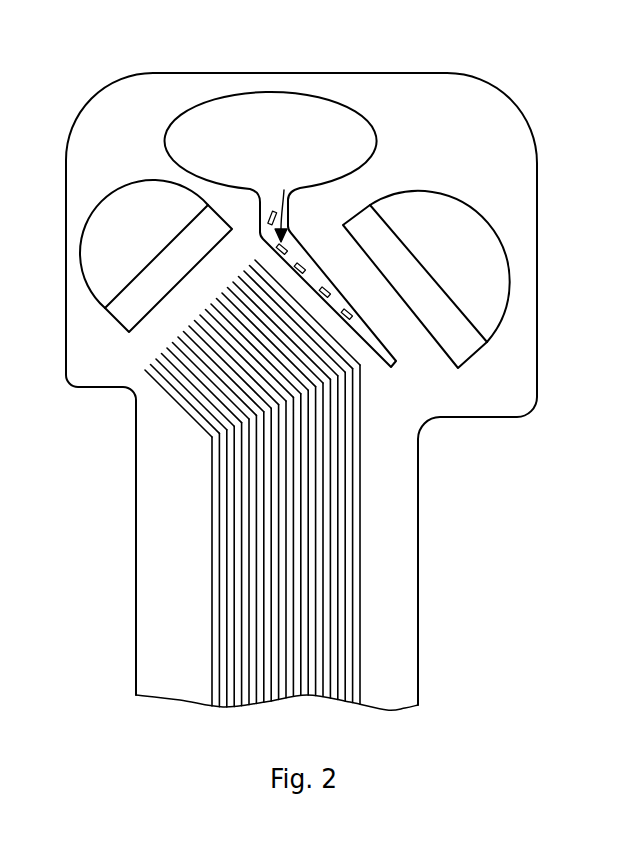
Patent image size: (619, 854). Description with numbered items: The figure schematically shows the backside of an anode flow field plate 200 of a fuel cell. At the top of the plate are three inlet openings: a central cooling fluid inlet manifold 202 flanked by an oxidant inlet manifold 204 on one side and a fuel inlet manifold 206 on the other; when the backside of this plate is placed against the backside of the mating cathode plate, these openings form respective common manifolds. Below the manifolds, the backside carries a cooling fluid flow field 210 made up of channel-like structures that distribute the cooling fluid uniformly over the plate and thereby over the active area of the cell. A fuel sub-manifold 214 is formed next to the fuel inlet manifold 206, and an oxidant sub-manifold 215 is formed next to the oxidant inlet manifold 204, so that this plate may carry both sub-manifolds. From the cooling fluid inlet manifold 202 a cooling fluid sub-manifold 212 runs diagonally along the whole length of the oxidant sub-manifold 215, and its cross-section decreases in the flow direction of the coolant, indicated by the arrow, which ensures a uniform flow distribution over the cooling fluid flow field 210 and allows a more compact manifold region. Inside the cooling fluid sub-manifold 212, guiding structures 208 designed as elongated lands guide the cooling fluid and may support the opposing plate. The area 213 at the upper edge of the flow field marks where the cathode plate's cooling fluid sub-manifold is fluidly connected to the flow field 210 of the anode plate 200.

The anode flow field plate 200 is at (516, 43).
The cooling fluid inlet manifold 202 is at (222, 125).
The oxidant inlet manifold 204 is at (452, 235).
The fuel inlet manifold 206 is at (123, 213).
The guiding structures 208 is at (335, 293).
The cooling fluid flow field 210 is at (362, 527).
The cooling fluid sub-manifold 212 is at (265, 197).
The connection area 213 is at (213, 380).
The fuel sub-manifold 214 is at (152, 293).
The oxidant sub-manifold 215 is at (435, 303).